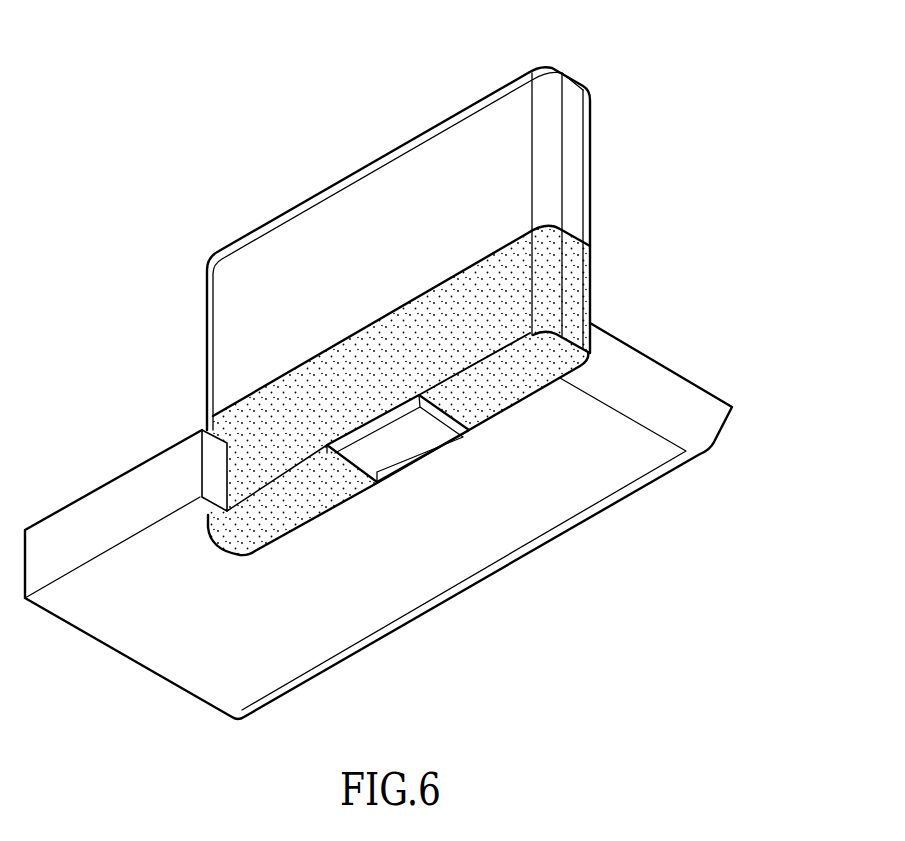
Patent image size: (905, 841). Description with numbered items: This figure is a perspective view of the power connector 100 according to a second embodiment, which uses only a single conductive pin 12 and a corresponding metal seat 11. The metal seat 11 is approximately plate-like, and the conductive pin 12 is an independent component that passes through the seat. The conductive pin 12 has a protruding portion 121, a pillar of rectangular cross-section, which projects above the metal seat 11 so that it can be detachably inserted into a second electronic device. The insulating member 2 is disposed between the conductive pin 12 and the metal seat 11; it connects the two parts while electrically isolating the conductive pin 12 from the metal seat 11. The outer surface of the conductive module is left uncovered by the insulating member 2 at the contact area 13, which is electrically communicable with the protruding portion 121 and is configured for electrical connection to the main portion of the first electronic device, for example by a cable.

The power connector 100 is at (77, 61).
The metal seat 11 is at (658, 395).
The conductive pin 12 is at (677, 137).
The protruding portion 121 is at (572, 147).
The insulating member 2 is at (253, 407).
The contact area 13 is at (410, 430).